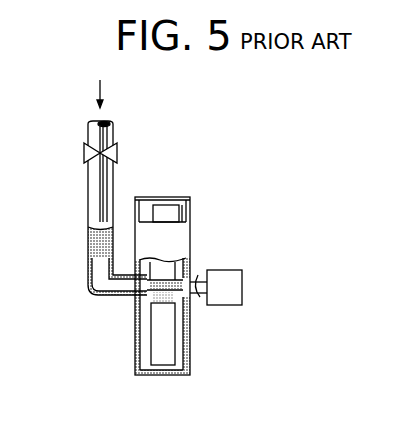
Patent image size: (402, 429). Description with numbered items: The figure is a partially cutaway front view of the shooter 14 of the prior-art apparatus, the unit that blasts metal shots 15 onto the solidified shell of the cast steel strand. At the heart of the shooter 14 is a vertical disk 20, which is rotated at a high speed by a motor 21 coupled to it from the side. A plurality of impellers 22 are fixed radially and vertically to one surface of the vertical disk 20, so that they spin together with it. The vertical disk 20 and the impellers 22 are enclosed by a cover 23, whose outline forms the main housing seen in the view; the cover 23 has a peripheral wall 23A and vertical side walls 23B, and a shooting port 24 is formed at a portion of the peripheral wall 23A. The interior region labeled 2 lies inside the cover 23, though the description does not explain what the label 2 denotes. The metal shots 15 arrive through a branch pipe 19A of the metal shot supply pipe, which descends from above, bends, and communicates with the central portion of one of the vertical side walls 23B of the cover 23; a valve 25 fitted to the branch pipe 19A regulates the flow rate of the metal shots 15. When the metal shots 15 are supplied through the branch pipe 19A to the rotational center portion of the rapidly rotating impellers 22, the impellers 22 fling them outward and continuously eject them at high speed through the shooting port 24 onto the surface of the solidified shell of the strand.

The container body 2 is at (180, 237).
The shooter 14 is at (214, 211).
The metal shots 15 is at (84, 257).
The branch pipe 19A is at (88, 198).
The vertical disk 20 is at (188, 322).
The motor 21 is at (242, 285).
The impellers 22 is at (160, 267).
The cover 23 is at (196, 196).
The peripheral wall 23A is at (172, 197).
The vertical side wall 23B is at (137, 371).
The shooting port 24 is at (147, 210).
The valve 25 is at (84, 152).